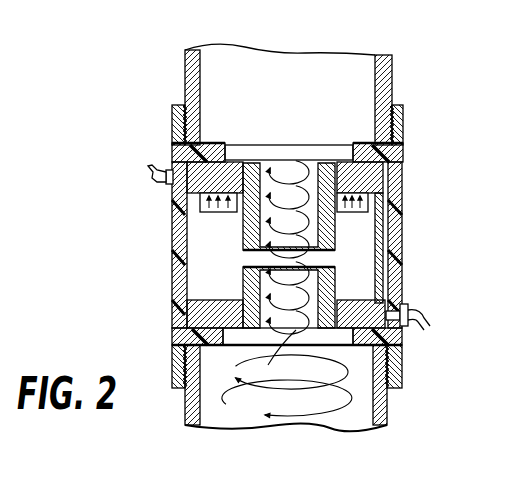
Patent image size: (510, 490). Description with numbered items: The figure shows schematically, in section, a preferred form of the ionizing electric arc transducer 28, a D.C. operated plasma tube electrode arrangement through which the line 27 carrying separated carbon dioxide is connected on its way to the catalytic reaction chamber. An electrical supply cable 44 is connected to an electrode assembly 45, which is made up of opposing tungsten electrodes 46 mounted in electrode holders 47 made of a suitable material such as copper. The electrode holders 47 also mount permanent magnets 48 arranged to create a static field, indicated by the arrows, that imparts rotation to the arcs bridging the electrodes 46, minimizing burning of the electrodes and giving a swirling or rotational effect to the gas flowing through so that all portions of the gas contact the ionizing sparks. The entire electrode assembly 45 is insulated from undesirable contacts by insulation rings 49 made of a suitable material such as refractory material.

The line 27 is at (393, 58).
The ionizing electric arc transducer 28 is at (406, 218).
The electrical supply cable 44 is at (147, 180).
The electrode assembly 45 is at (172, 246).
The tungsten electrodes 46 is at (243, 272).
The electrode holders 47 is at (382, 172).
The permanent magnets 48 is at (222, 213).
The insulation rings 49 is at (222, 147).